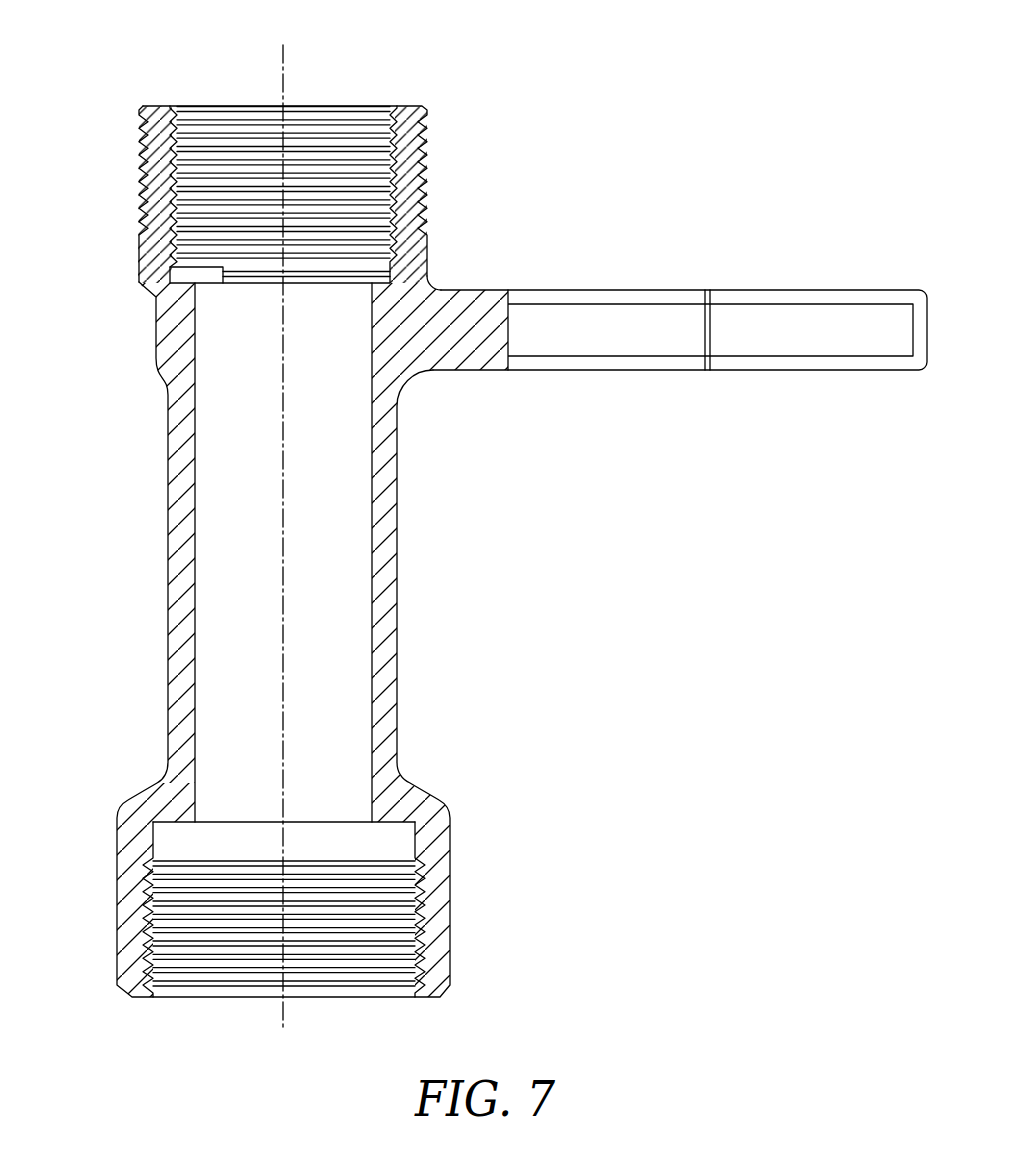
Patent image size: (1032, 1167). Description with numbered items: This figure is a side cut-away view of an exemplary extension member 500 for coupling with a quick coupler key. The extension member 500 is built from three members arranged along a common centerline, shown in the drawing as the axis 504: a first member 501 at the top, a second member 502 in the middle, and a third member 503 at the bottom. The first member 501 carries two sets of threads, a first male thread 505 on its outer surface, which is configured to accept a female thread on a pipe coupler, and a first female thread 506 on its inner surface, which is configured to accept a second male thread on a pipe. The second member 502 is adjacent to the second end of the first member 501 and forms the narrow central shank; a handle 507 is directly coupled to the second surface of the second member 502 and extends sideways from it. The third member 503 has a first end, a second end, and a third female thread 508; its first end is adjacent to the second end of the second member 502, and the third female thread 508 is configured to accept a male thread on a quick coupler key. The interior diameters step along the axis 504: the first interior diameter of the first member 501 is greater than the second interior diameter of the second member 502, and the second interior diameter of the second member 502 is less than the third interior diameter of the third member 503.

The extension member 500 is at (128, 50).
The first member 501 is at (110, 186).
The second member 502 is at (132, 566).
The third member 503 is at (90, 905).
The longitudinal axis 504 is at (284, 62).
The first male thread 505 is at (430, 136).
The first female thread 506 is at (380, 122).
The handle 507 is at (644, 290).
The third female thread 508 is at (386, 990).